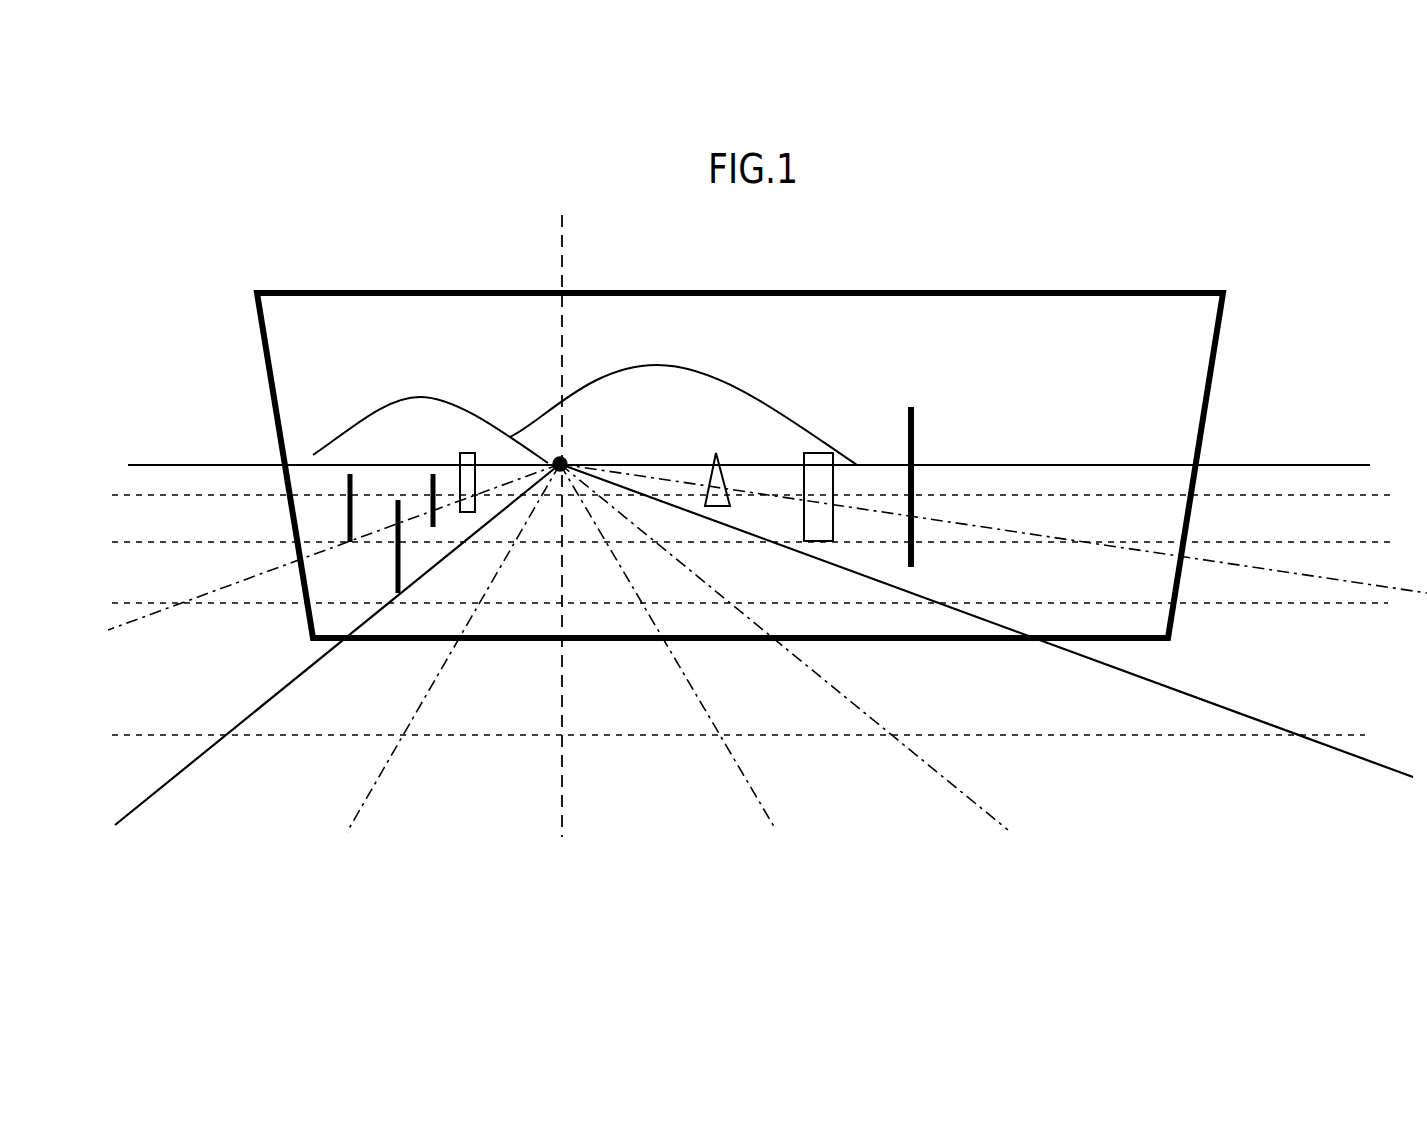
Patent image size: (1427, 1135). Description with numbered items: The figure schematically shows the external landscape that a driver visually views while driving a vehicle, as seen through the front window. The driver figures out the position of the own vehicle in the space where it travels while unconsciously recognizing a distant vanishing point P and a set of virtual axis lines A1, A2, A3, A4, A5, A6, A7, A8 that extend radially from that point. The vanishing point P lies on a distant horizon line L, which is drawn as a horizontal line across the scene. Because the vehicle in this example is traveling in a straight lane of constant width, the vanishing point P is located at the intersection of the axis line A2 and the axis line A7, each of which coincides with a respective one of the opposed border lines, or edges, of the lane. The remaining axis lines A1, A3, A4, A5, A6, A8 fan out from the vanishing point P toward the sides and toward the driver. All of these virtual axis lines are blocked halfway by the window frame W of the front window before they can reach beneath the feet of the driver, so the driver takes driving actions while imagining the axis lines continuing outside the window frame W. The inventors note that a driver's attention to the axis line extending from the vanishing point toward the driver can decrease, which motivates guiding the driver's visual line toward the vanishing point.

The window frame W is at (1060, 300).
The horizon line L is at (1320, 465).
The vanishing point P is at (575, 456).
The axis line A1 is at (125, 625).
The axis line A2 is at (158, 800).
The axis line A3 is at (360, 815).
The axis line A4 is at (565, 812).
The axis line A5 is at (768, 815).
The axis line A6 is at (985, 808).
The axis line A7 is at (1375, 765).
The axis line A8 is at (1408, 600).